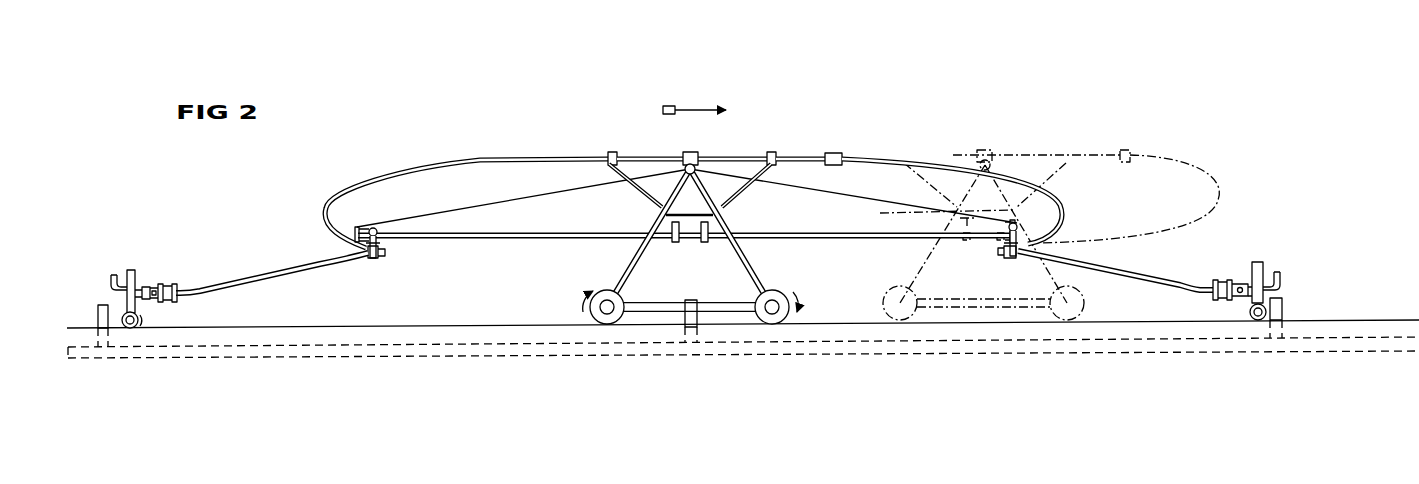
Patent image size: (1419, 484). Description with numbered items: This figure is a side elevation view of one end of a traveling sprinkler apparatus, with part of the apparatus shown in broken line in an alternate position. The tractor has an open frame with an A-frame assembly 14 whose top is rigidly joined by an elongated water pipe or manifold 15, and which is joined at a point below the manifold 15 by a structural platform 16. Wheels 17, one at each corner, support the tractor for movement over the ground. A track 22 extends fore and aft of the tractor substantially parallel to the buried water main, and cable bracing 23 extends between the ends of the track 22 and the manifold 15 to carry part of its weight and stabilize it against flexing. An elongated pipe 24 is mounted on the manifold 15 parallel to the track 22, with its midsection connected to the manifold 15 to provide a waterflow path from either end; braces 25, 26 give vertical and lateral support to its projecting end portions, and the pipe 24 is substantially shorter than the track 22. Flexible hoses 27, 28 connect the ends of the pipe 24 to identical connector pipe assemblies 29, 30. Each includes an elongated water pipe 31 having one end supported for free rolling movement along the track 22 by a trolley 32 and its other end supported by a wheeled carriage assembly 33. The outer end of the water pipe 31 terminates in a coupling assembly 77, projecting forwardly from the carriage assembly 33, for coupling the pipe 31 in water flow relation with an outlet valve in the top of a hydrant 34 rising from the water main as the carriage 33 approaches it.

The A-frame assembly 14 is at (755, 265).
The manifold 15 is at (691, 164).
The structural platform 16 is at (690, 219).
The wheels 17 is at (590, 311).
The track 22 is at (517, 241).
The cable bracing 23 is at (476, 206).
The pipe 24 is at (751, 152).
The brace 25 is at (645, 197).
The brace 26 is at (662, 165).
The flexible hose 27 is at (481, 154).
The flexible hose 28 is at (857, 153).
The connector pipe assembly 29 is at (183, 277).
The connector pipe assembly 30 is at (1201, 277).
The water pipe 31 is at (294, 273).
The trolley 32 is at (385, 246).
The wheeled carriage assembly 33 is at (134, 278).
The hydrant 34 is at (110, 314).
The coupling assembly 77 is at (106, 291).